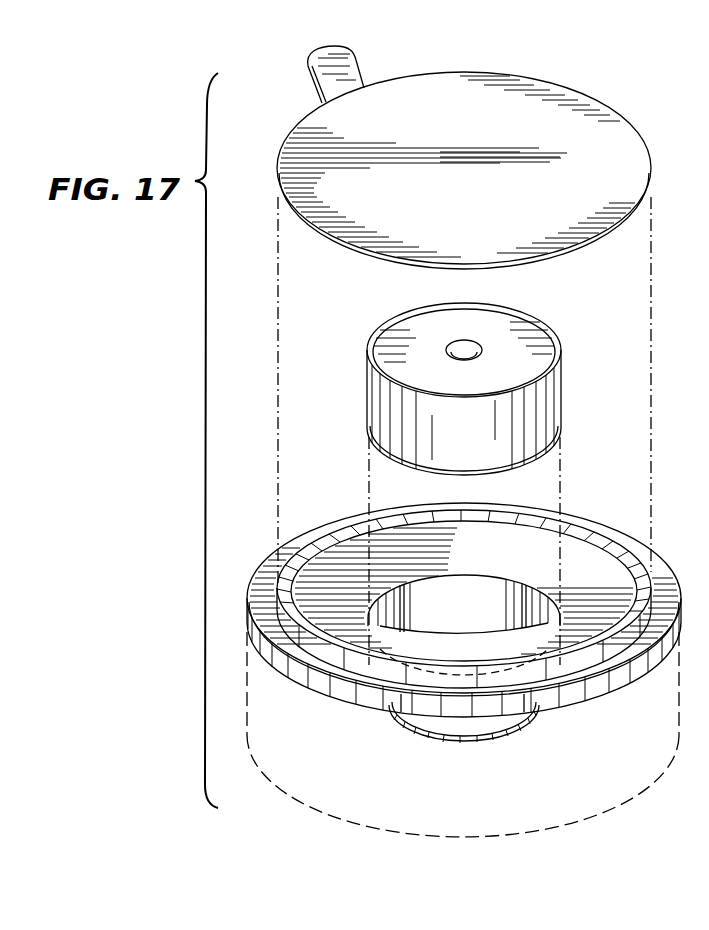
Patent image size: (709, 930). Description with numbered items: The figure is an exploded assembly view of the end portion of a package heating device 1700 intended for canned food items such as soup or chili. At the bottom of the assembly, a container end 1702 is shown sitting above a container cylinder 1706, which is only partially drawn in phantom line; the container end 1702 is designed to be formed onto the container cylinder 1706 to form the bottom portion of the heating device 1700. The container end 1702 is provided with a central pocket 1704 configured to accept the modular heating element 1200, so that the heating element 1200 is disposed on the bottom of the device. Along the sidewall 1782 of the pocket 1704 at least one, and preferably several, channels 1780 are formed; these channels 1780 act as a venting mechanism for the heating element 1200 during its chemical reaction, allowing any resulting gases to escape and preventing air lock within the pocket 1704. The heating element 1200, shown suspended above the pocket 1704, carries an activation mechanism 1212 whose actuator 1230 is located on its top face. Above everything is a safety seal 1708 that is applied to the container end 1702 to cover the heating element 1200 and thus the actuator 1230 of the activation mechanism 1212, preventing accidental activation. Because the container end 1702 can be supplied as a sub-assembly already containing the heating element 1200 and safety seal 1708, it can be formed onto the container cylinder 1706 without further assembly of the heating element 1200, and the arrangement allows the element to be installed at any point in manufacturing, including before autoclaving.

The package heating device 1700 is at (205, 428).
The safety seal 1708 is at (617, 115).
The heating element 1200 is at (478, 374).
The actuator 1230 is at (462, 344).
The activation mechanism 1212 is at (448, 351).
The container end 1702 is at (247, 609).
The sidewall 1782 is at (450, 587).
The pocket 1704 is at (477, 653).
The channel 1780 is at (380, 612).
The container cylinder 1706 is at (270, 775).